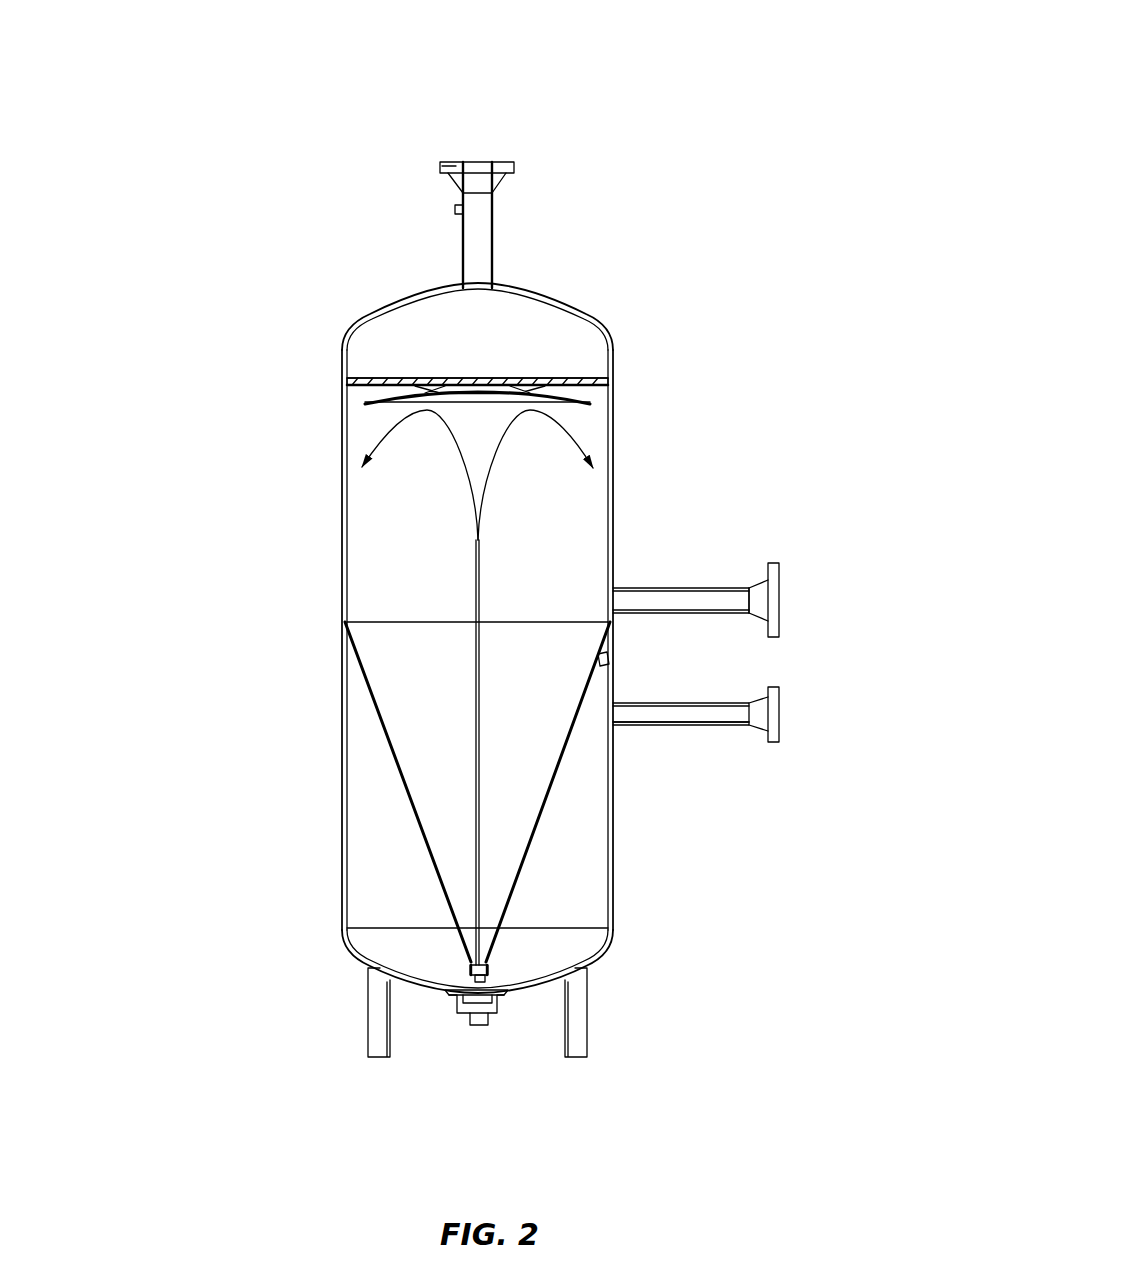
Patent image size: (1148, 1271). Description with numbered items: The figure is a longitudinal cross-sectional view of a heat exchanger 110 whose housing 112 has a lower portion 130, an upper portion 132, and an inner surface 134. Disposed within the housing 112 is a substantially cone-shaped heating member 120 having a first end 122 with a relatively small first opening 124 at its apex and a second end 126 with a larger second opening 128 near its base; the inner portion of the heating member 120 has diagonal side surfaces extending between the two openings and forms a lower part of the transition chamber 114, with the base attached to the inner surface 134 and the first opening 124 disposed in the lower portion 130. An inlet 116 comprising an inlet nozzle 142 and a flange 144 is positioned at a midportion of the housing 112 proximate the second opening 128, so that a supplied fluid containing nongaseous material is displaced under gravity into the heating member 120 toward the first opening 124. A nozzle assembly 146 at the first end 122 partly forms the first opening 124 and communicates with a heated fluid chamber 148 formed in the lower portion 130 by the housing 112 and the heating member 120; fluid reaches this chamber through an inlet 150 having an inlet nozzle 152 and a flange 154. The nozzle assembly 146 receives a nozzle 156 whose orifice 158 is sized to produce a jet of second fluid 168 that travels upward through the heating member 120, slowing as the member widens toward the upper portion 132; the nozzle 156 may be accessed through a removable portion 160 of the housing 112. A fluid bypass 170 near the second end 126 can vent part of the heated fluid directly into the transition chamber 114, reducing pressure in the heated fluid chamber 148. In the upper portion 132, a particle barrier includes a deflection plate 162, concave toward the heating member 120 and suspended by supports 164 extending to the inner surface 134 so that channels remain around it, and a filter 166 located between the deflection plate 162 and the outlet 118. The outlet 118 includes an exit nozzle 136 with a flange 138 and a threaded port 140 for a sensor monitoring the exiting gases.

The heat exchanger 110 is at (277, 50).
The housing 112 is at (615, 342).
The transition chamber 114 is at (397, 548).
The inlet 116 is at (725, 588).
The outlet 118 is at (492, 235).
The heating member 120 is at (405, 785).
The first end 122 is at (495, 969).
The first opening 124 is at (600, 932).
The second end 126 is at (403, 613).
The second opening 128 is at (378, 622).
The lower portion 130 is at (590, 872).
The upper portion 132 is at (574, 505).
The inner surface 134 is at (615, 380).
The exit nozzle 136 is at (497, 160).
The flange 138 is at (440, 163).
The threaded port 140 is at (455, 208).
The inlet nozzle 142 is at (766, 608).
The flange 144 is at (775, 567).
The nozzle assembly 146 is at (468, 978).
The heated fluid chamber 148 is at (370, 902).
The inlet 150 is at (655, 722).
The inlet nozzle 152 is at (773, 690).
The flange 154 is at (775, 740).
The nozzle 156 is at (470, 979).
The orifice 158 is at (458, 993).
The removable portion 160 is at (480, 1017).
The deflection plate 162 is at (350, 387).
The supports 164 is at (363, 403).
The filter 166 is at (422, 378).
The jet of second fluid 168 is at (476, 697).
The fluid bypass 170 is at (600, 658).